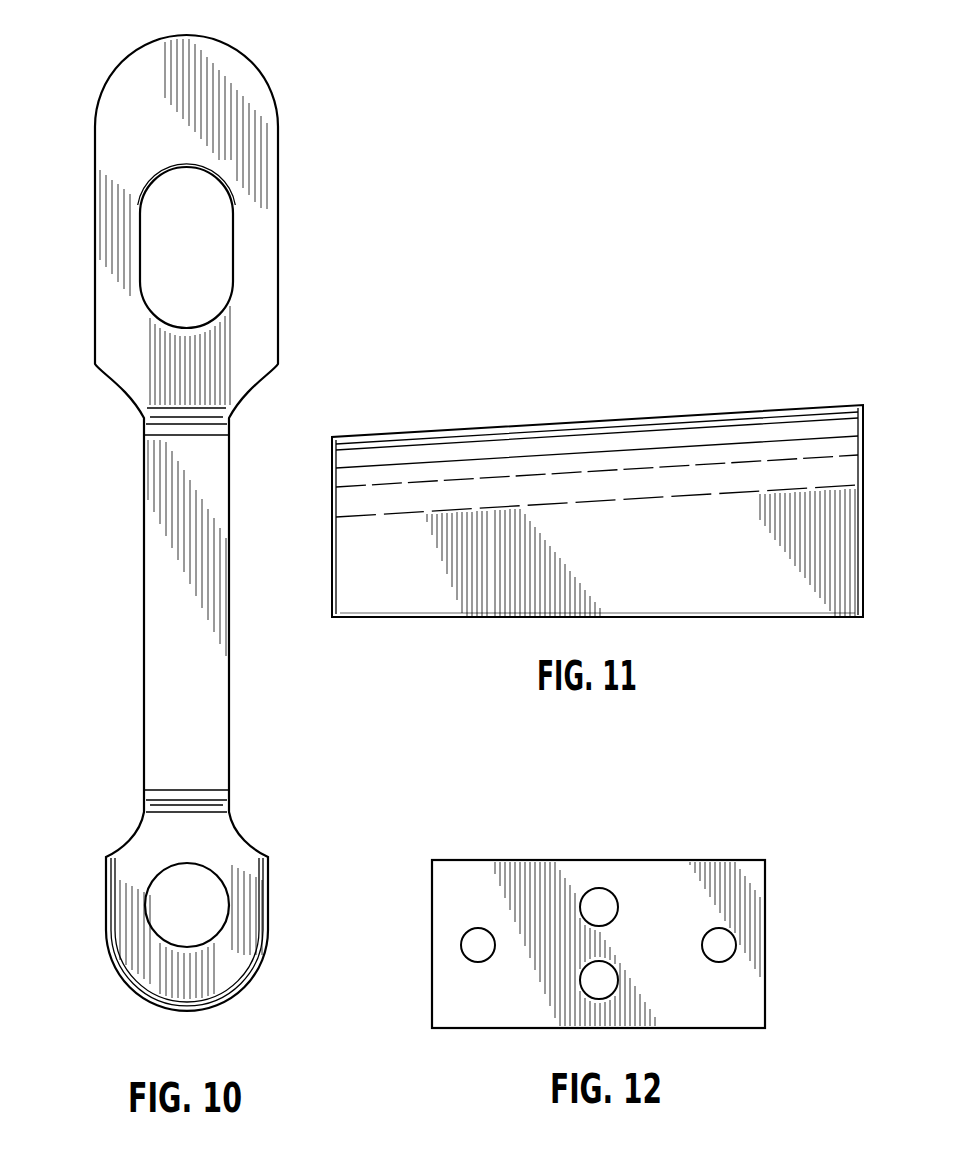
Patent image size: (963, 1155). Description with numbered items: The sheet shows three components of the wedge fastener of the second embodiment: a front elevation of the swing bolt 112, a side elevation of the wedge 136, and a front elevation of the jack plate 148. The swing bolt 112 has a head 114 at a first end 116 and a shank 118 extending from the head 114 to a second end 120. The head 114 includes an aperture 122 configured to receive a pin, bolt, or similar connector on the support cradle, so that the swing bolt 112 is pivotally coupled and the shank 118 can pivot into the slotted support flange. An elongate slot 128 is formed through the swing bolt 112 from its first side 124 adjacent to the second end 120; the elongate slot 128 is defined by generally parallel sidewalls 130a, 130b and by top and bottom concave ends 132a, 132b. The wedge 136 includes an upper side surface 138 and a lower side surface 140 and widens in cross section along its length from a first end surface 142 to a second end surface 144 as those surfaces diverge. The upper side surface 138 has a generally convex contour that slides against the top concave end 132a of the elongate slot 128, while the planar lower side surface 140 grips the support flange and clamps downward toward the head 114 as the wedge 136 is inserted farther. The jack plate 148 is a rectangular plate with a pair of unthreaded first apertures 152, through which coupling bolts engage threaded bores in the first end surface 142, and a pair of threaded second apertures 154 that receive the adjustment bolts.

In FIG. 10, the swing bolt 112 is at (249, 56).
In FIG. 10, the head 114 is at (116, 853).
In FIG. 10, the first end 116 is at (195, 1010).
In FIG. 10, the shank 118 is at (130, 390).
In FIG. 10, the second end 120 is at (152, 42).
In FIG. 10, the aperture 122 is at (167, 913).
In FIG. 10, the first side 124 is at (203, 698).
In FIG. 10, the elongate slot 128 is at (152, 287).
In FIG. 10, the sidewall 130a is at (137, 220).
In FIG. 10, the sidewall 130b is at (235, 263).
In FIG. 10, the top concave end 132a is at (194, 166).
In FIG. 10, the bottom concave end 132b is at (192, 333).
In FIG. 11, the wedge 136 is at (551, 415).
In FIG. 11, the upper side surface 138 is at (649, 417).
In FIG. 11, the lower side surface 140 is at (427, 618).
In FIG. 11, the first end surface 142 is at (330, 570).
In FIG. 11, the second end surface 144 is at (865, 585).
In FIG. 12, the jack plate 148 is at (552, 852).
In FIG. 12, the unthreaded first apertures 152 is at (581, 904).
In FIG. 12, the threaded second apertures 154 is at (478, 927).